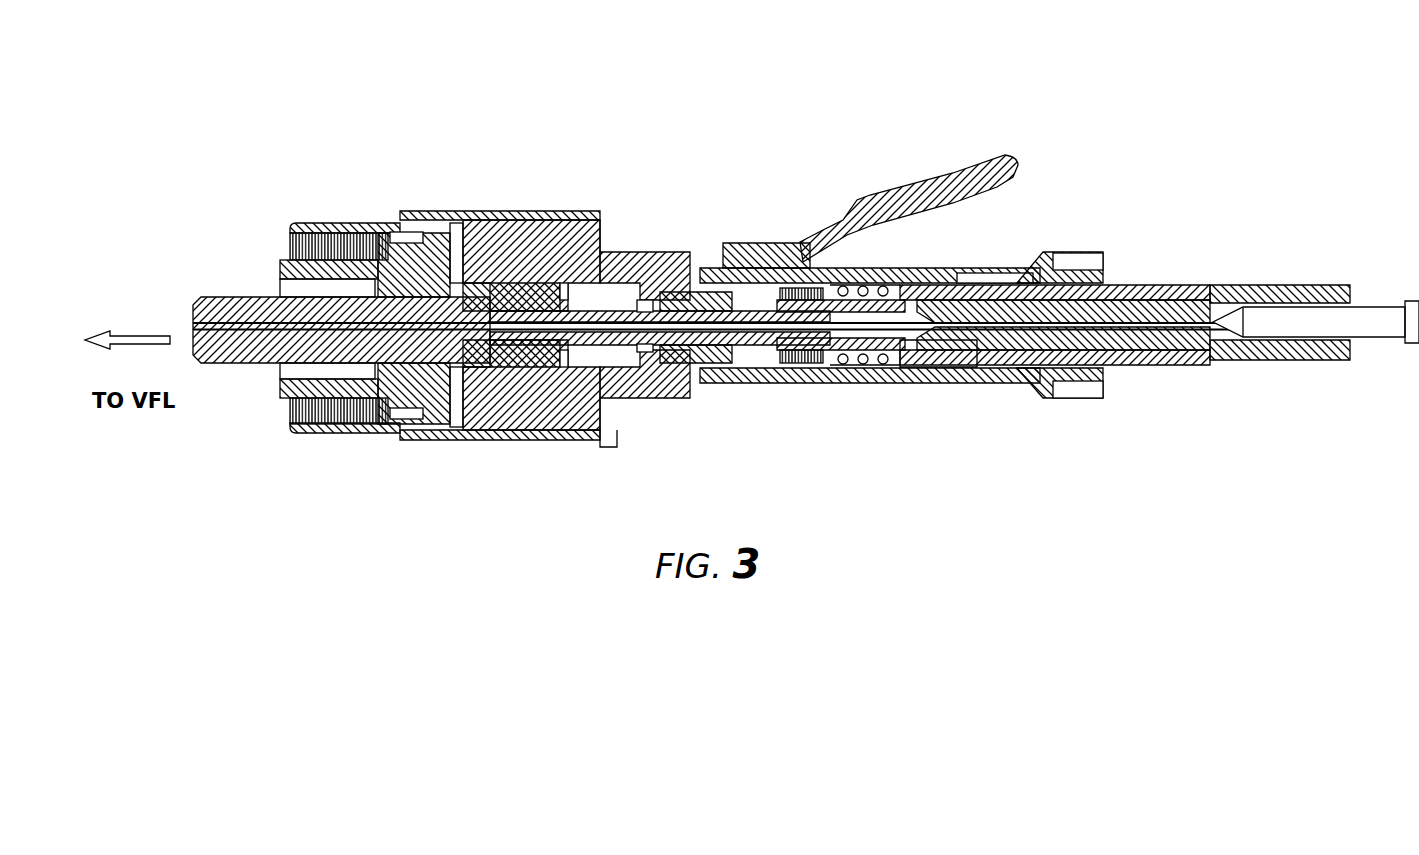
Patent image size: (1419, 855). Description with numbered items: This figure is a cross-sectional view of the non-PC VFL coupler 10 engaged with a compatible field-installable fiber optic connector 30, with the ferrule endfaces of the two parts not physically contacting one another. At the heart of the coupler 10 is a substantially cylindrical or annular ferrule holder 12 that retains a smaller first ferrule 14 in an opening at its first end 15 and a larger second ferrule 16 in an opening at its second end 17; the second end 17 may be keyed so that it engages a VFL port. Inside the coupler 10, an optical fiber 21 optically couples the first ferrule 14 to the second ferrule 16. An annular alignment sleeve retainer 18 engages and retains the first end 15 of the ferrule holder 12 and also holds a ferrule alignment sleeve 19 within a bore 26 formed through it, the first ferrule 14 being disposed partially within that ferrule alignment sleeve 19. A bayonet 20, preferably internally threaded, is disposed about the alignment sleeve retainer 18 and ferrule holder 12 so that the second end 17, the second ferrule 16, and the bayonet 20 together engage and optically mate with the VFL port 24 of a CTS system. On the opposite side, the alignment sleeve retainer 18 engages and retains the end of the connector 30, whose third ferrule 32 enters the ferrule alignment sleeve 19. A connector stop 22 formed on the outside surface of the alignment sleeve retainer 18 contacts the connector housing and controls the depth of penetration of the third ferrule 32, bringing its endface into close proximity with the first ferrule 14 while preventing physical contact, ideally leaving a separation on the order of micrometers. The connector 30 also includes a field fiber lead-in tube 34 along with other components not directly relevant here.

The non-PC VFL coupler 10 is at (548, 155).
The ferrule holder 12 is at (520, 280).
The first ferrule 14 is at (617, 262).
The first end 15 is at (527, 374).
The second ferrule 16 is at (265, 364).
The second end 17 is at (303, 385).
The alignment sleeve retainer 18 is at (682, 258).
The ferrule alignment sleeve 19 is at (693, 290).
The bayonet 20 is at (588, 446).
The optical fiber 21 is at (463, 285).
The connector stop 22 is at (706, 396).
The VFL port 24 is at (80, 352).
The bore 26 is at (727, 250).
The connector 30 is at (1052, 178).
The third ferrule 32 is at (753, 342).
The field fiber lead-in tube 34 is at (1388, 306).